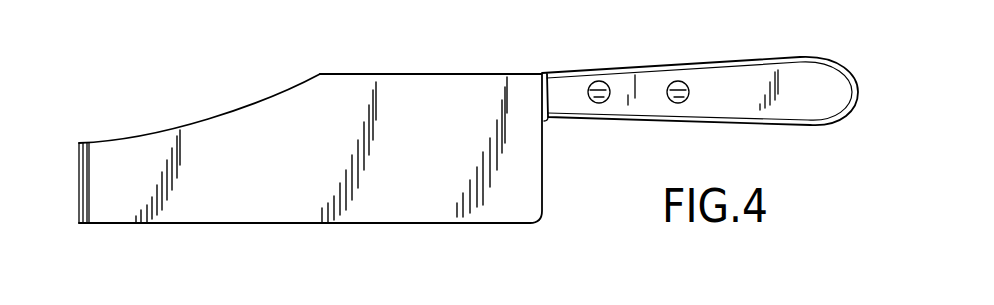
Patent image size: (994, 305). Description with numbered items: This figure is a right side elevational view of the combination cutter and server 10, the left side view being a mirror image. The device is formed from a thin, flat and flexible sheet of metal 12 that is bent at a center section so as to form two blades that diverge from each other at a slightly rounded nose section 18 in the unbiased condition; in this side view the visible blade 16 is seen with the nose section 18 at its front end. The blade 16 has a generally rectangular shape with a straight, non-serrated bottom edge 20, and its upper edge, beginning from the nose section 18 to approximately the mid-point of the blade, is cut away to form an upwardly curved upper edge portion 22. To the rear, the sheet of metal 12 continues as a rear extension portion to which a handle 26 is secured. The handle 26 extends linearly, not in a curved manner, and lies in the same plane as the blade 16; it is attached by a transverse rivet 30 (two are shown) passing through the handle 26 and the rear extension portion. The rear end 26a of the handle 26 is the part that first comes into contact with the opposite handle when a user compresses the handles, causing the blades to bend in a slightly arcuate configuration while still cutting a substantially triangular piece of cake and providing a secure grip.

The combination cutter and server 10 is at (472, 147).
The sheet of metal 12 is at (90, 196).
The blade 16 is at (237, 217).
The nose section 18 is at (79, 175).
The bottom edge 20 is at (345, 225).
The upwardly curved upper edge portion 22 is at (248, 108).
The handle 26 is at (700, 108).
The rear end 26a is at (833, 77).
The rivet 30 is at (668, 85).